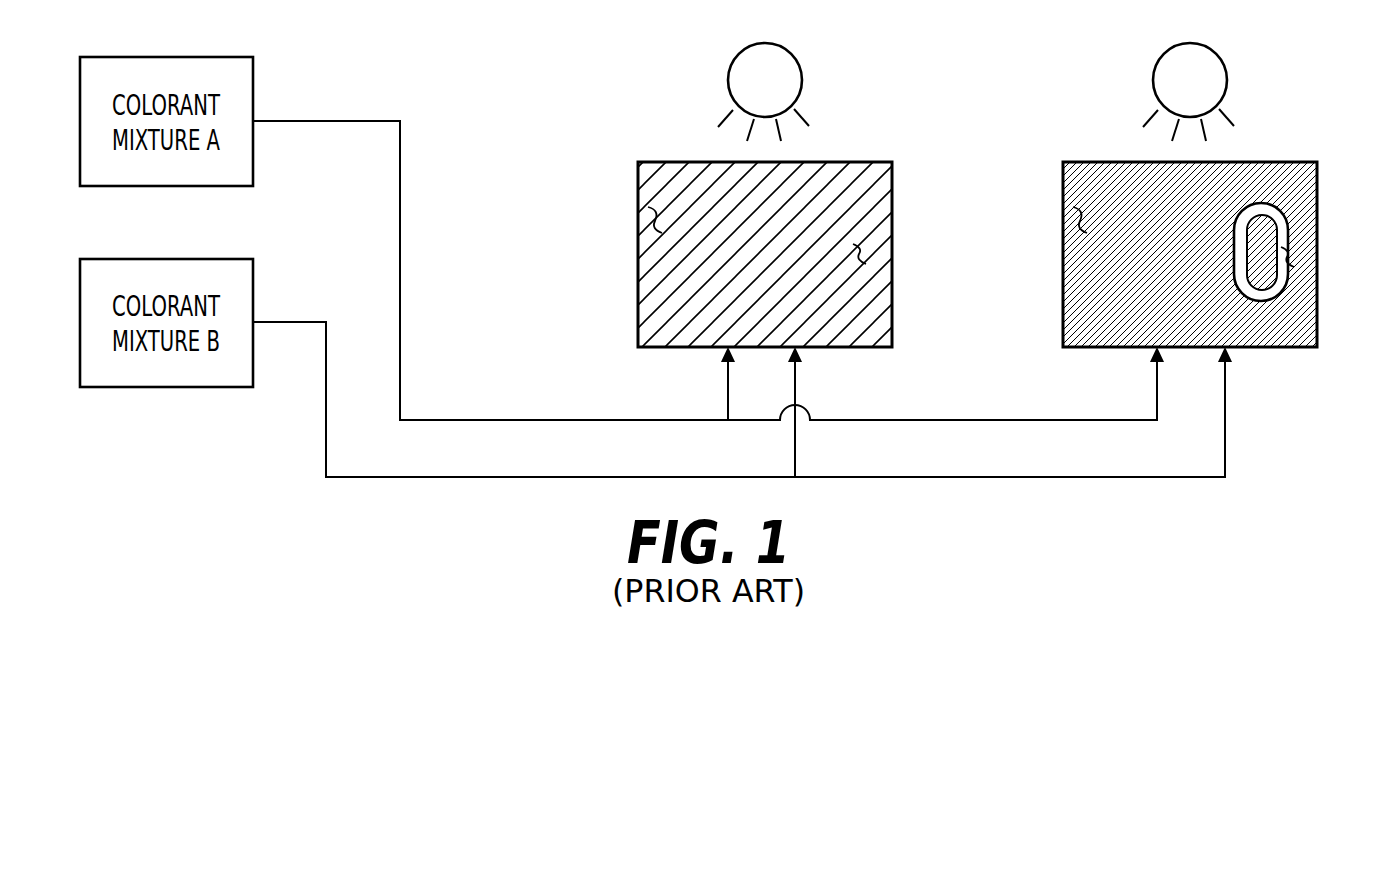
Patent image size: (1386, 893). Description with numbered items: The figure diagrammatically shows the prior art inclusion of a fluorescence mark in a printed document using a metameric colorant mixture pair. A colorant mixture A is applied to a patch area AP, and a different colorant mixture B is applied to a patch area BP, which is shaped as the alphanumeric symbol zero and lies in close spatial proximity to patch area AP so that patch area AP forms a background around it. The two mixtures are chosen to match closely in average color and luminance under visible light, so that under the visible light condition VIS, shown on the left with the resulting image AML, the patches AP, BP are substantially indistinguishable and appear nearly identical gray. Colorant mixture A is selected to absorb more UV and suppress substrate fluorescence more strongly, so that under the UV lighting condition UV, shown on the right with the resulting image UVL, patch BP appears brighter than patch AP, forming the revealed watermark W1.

The visible light viewing condition VIS is at (675, 129).
The UV lighting condition UV is at (1106, 128).
The ambient light image AML is at (850, 150).
The UV light image UVL is at (1270, 150).
The patch area AP is at (655, 219).
The patch area BP is at (860, 251).
The watermark W1 is at (1278, 287).